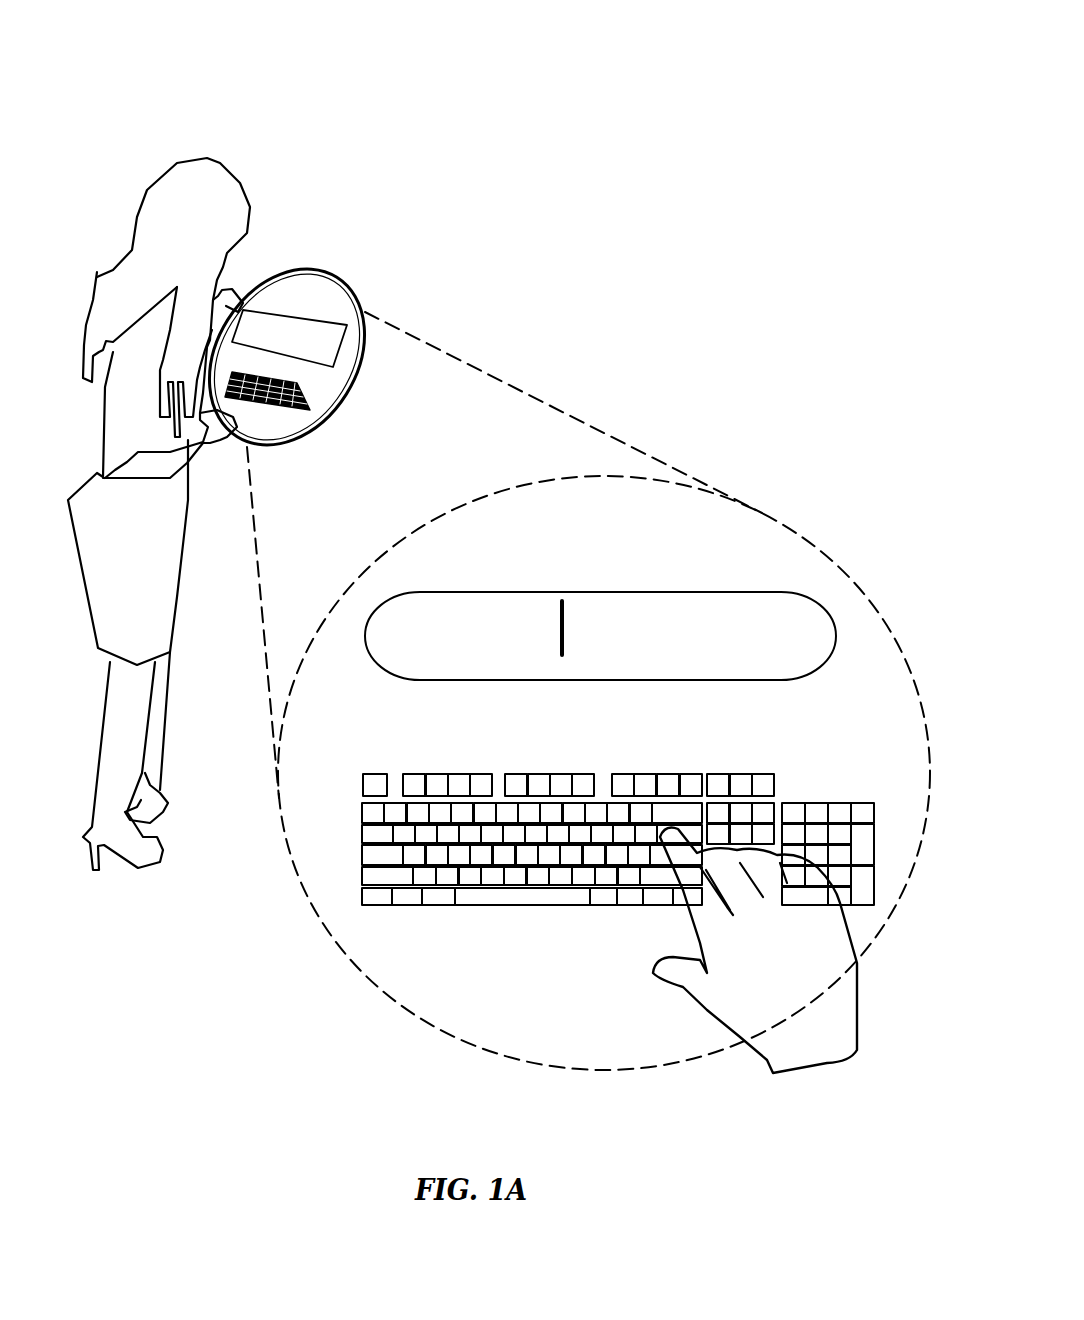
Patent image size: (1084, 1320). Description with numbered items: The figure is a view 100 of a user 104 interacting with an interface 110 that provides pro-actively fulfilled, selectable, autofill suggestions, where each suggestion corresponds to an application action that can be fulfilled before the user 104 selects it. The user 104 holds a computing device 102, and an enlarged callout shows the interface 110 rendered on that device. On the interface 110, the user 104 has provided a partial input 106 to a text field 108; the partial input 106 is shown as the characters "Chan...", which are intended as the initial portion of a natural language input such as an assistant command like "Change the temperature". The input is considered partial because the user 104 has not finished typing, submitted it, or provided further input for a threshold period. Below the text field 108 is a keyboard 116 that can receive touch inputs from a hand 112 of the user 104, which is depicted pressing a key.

The view 100 is at (700, 116).
The computing device 102 is at (355, 385).
The user 104 is at (140, 214).
The partial input 106 is at (600, 599).
The text field 108 is at (497, 588).
The interface 110 is at (618, 879).
The hand 112 is at (755, 950).
The keyboard 116 is at (553, 924).